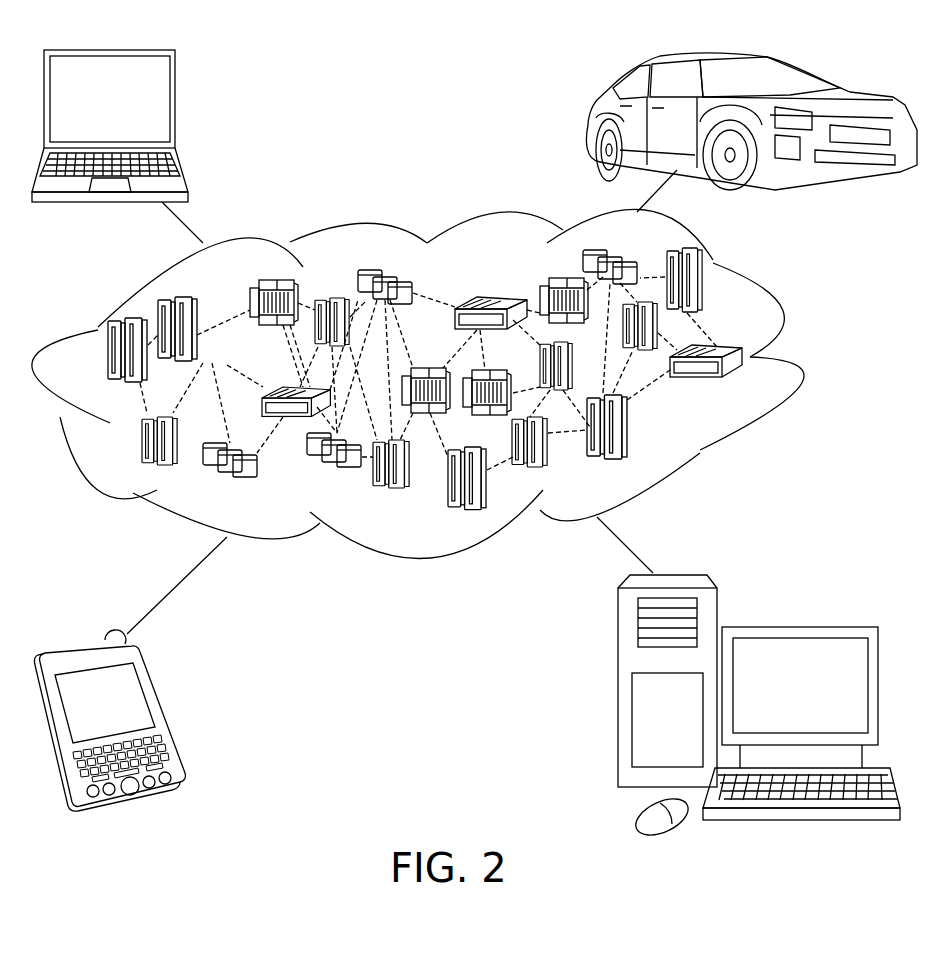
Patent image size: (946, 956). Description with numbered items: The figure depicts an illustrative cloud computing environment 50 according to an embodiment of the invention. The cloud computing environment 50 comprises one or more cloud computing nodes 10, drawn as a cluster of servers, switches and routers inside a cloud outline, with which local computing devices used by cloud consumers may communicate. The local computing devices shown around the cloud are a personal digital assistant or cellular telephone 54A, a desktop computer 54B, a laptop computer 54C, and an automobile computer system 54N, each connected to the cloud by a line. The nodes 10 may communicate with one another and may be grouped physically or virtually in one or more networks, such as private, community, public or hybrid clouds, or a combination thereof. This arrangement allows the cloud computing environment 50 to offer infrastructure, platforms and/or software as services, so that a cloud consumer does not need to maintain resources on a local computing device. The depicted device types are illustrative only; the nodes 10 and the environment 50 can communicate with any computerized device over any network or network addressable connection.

The cloud computing node 10 is at (743, 388).
The cloud computing environment 50 is at (800, 363).
The personal digital assistant or cellular telephone 54A is at (163, 716).
The desktop computer 54B is at (797, 626).
The laptop computer 54C is at (175, 104).
The automobile computer system 54N is at (592, 124).